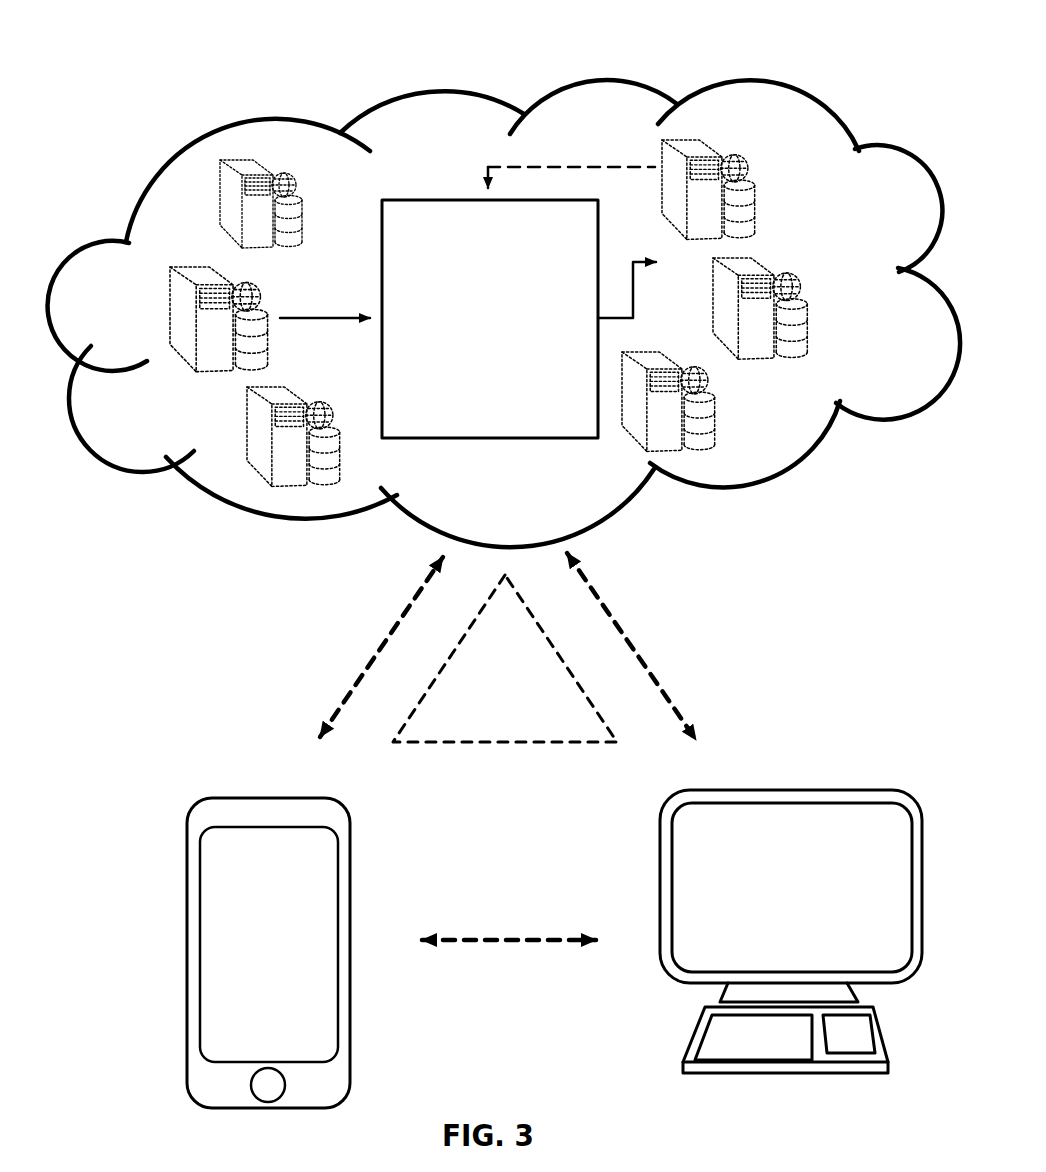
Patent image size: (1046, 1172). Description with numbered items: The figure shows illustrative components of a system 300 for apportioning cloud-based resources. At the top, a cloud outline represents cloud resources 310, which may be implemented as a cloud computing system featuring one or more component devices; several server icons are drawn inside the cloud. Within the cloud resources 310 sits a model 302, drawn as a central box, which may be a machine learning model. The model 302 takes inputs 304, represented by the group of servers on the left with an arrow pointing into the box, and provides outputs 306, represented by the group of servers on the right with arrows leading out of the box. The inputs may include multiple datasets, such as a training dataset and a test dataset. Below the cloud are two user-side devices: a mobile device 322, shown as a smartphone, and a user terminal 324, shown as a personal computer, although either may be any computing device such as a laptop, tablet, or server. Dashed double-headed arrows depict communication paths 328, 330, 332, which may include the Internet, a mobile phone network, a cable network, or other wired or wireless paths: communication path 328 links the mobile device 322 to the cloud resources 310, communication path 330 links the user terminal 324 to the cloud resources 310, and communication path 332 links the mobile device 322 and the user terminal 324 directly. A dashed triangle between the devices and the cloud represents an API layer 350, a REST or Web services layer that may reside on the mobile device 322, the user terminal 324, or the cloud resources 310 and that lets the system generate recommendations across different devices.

The system 300 is at (466, 28).
The model 302 is at (470, 334).
The inputs 304 is at (180, 168).
The outputs 306 is at (778, 232).
The cloud resources 310 is at (475, 488).
The mobile device 322 is at (258, 769).
The user terminal 324 is at (784, 775).
The communication path 328 is at (337, 627).
The communication path 330 is at (709, 597).
The communication path 332 is at (501, 904).
The API layer 350 is at (487, 681).